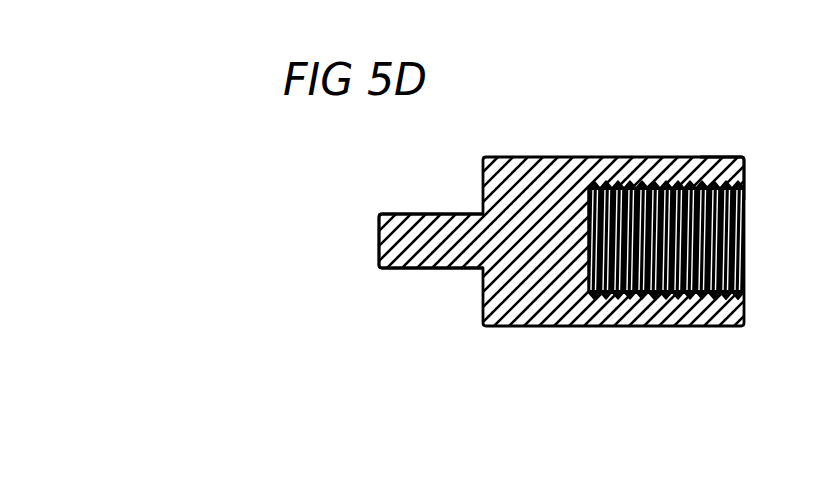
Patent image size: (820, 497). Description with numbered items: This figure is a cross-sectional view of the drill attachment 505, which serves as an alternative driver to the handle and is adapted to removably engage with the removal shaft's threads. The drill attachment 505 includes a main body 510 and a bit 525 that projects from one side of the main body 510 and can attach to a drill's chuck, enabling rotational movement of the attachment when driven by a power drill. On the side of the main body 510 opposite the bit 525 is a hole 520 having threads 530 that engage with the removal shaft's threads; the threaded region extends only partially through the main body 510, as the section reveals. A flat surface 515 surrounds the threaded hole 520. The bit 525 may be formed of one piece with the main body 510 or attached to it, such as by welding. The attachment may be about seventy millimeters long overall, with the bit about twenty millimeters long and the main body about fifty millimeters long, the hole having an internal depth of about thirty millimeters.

The drill attachment 505 is at (727, 115).
The main body 510 is at (532, 327).
The flat surface 515 is at (744, 159).
The hole 520 is at (745, 240).
The bit 525 is at (378, 243).
The threads 530 is at (742, 288).